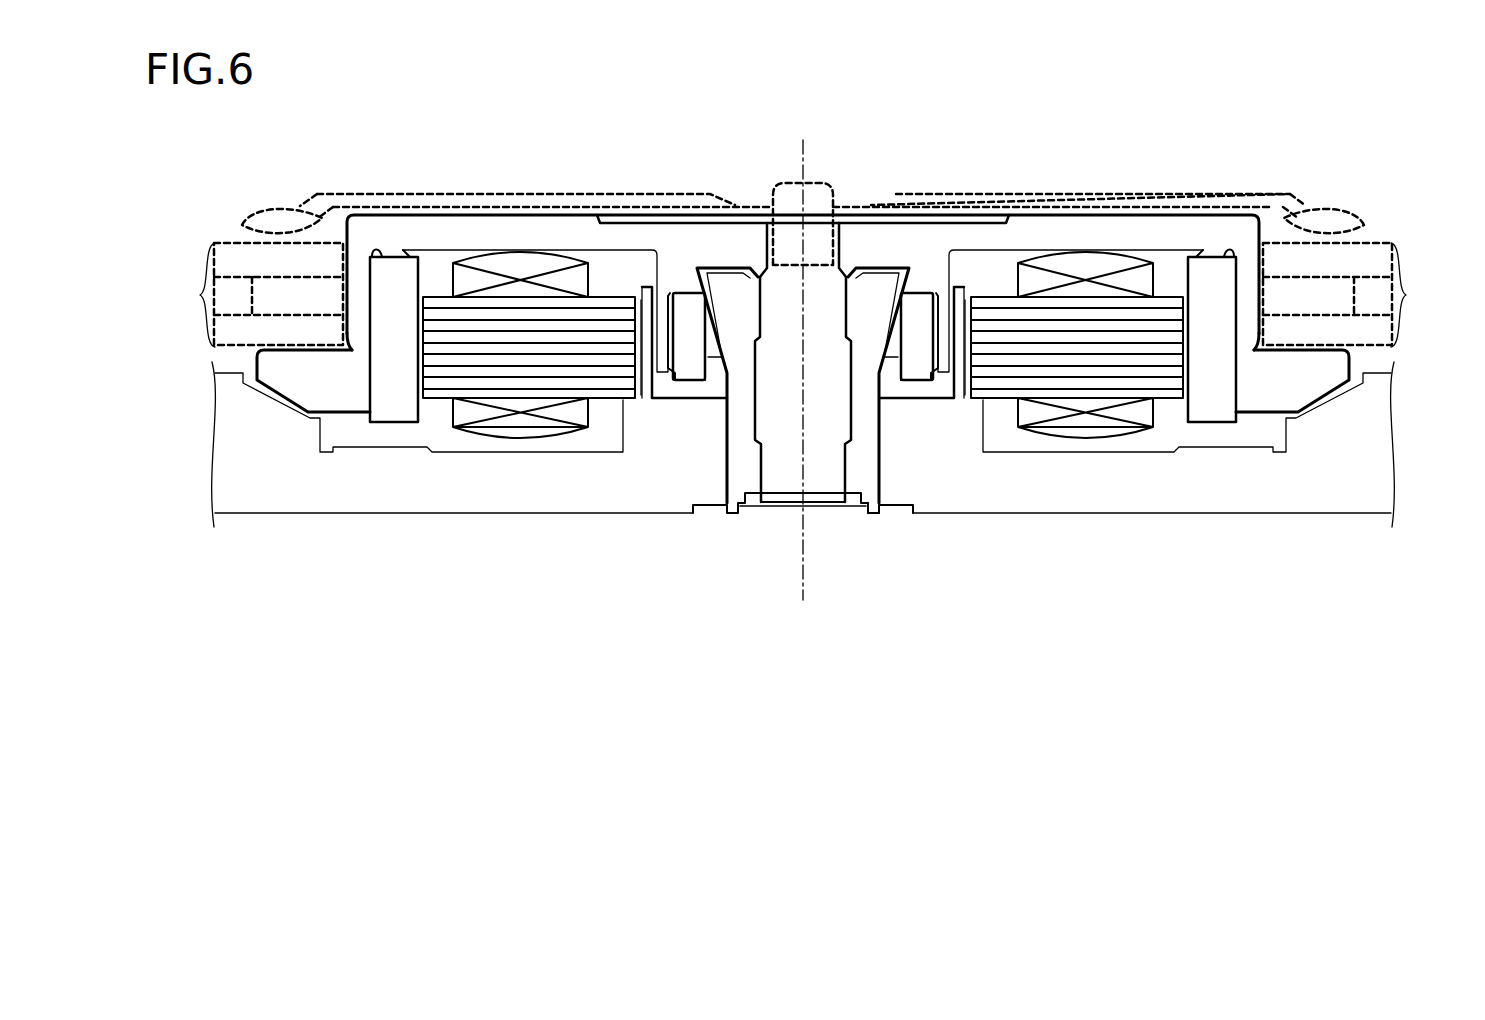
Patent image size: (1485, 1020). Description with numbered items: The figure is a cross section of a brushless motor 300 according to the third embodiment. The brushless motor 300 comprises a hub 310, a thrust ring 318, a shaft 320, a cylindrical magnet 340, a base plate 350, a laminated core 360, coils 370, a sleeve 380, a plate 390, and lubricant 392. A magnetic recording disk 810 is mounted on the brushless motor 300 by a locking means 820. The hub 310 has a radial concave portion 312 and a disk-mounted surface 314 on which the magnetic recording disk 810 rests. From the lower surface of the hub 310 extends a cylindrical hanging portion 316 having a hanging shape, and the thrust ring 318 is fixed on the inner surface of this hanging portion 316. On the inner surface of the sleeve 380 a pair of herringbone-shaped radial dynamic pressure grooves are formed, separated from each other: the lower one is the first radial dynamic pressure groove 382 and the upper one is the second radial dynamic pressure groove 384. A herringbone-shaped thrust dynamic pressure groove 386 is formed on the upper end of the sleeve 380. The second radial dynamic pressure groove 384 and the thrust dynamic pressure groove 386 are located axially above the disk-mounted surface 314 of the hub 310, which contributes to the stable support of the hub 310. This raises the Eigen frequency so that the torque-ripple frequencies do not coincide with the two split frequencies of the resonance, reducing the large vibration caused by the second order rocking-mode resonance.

The brushless motor 300 is at (786, 694).
The hub 310 is at (283, 373).
The radial concave portion 312 is at (354, 345).
The disk-mounted surface 314 is at (303, 347).
The cylindrical hanging portion 316 is at (667, 363).
The thrust ring 318 is at (692, 367).
The shaft 320 is at (813, 483).
The cylindrical magnet 340 is at (398, 405).
The base plate 350 is at (236, 448).
The laminated core 360 is at (440, 385).
The coils 370 is at (520, 427).
The sleeve 380 is at (738, 492).
The first radial dynamic pressure groove 382 is at (770, 470).
The second radial dynamic pressure groove 384 is at (772, 305).
The thrust dynamic pressure groove 386 is at (718, 278).
The plate 390 is at (788, 505).
The lubricant 392 is at (882, 497).
The magnetic recording disk 810 is at (200, 295).
The locking means 820 is at (326, 290).